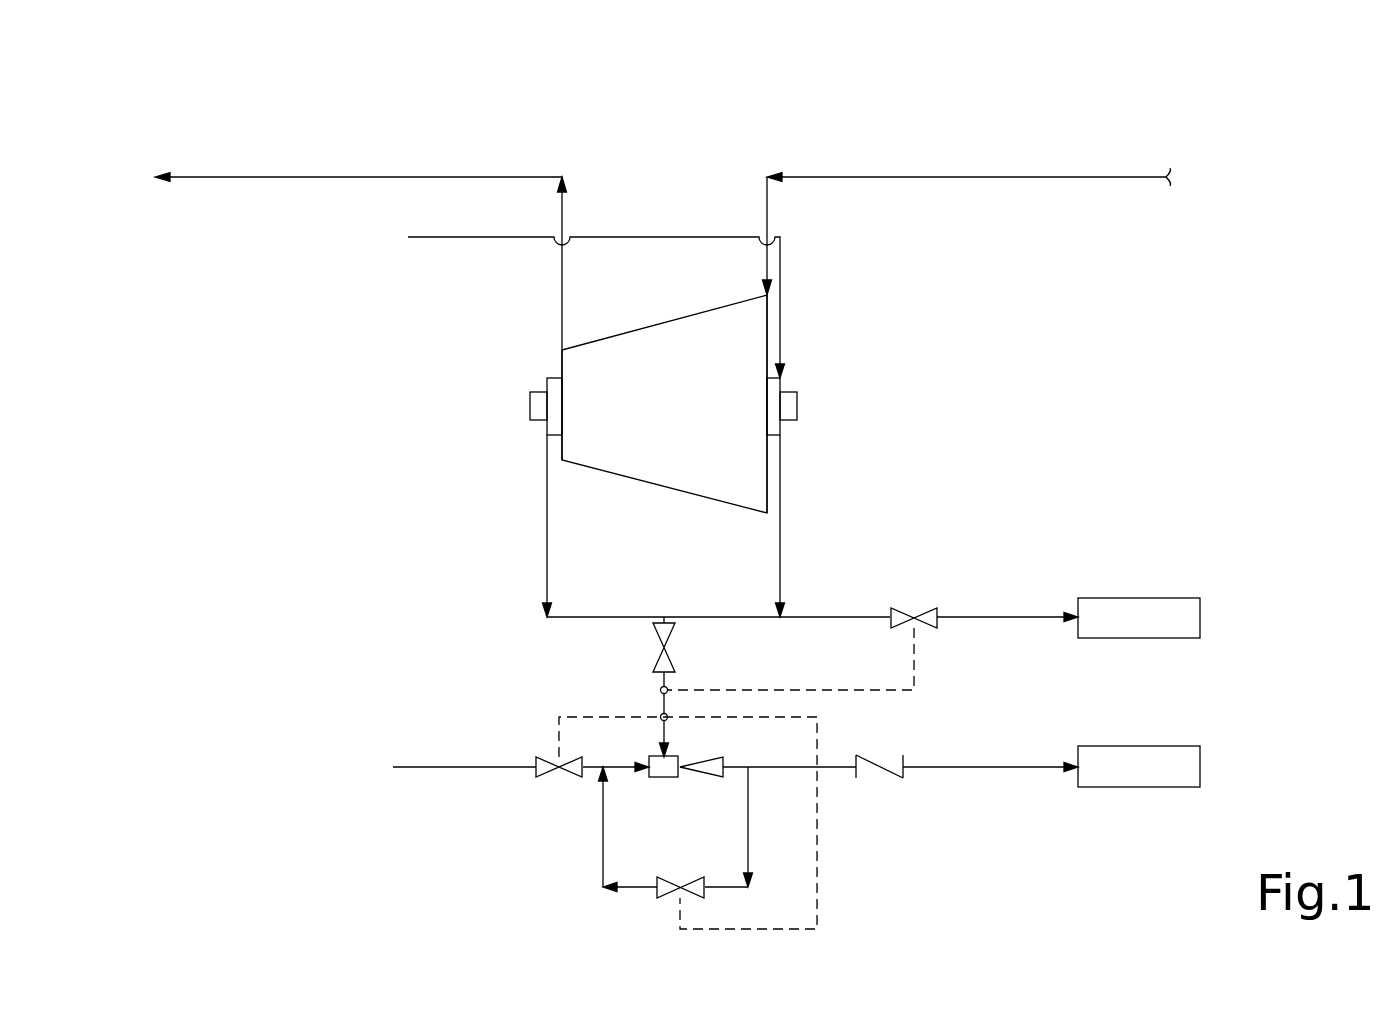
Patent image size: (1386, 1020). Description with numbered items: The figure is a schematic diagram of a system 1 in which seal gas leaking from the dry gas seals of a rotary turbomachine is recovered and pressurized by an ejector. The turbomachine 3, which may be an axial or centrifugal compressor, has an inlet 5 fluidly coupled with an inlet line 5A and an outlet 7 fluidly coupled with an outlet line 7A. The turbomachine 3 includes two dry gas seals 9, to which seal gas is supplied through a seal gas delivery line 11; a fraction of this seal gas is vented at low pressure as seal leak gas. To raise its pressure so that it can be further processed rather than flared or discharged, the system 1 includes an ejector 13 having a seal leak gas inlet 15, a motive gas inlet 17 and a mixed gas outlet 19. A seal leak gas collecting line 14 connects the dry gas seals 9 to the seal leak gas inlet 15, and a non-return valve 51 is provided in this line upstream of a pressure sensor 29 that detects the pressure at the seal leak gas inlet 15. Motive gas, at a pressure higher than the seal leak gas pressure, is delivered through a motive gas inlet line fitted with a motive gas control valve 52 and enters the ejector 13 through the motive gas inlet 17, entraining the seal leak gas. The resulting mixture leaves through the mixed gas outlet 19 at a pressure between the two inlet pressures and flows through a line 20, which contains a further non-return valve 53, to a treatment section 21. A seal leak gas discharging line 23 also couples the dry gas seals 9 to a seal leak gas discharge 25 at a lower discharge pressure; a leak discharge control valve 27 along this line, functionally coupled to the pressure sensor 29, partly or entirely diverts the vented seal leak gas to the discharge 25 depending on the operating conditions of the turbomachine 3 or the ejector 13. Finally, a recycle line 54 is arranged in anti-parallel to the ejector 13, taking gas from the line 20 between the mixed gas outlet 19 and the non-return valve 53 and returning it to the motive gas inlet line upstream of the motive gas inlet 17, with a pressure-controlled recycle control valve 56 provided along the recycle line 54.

The system 1 is at (1097, 84).
The turbomachine 3 is at (658, 419).
The inlet 5 is at (765, 296).
The inlet line 5A is at (998, 177).
The outlet 7 is at (565, 350).
The outlet line 7A is at (470, 177).
The dry gas seals 9 is at (545, 426).
The seal gas delivery line 11 is at (490, 237).
The ejector 13 is at (700, 790).
The seal leak gas collecting line 14 is at (662, 678).
The seal leak gas inlet 15 is at (669, 756).
The motive gas inlet 17 is at (648, 775).
The mixed gas outlet 19 is at (722, 765).
The line 20 is at (1014, 767).
The treatment section 21 is at (1172, 756).
The seal leak gas discharging line 23 is at (1000, 617).
The seal leak gas discharge 25 is at (1172, 606).
The leak discharge control valve 27 is at (914, 608).
The pressure sensor 29 is at (660, 717).
The non-return valve 51 is at (666, 647).
The motive gas control valve 52 is at (559, 778).
The non-return valve 53 is at (903, 757).
The recycle line 54 is at (748, 838).
The recycle control valve 56 is at (677, 898).